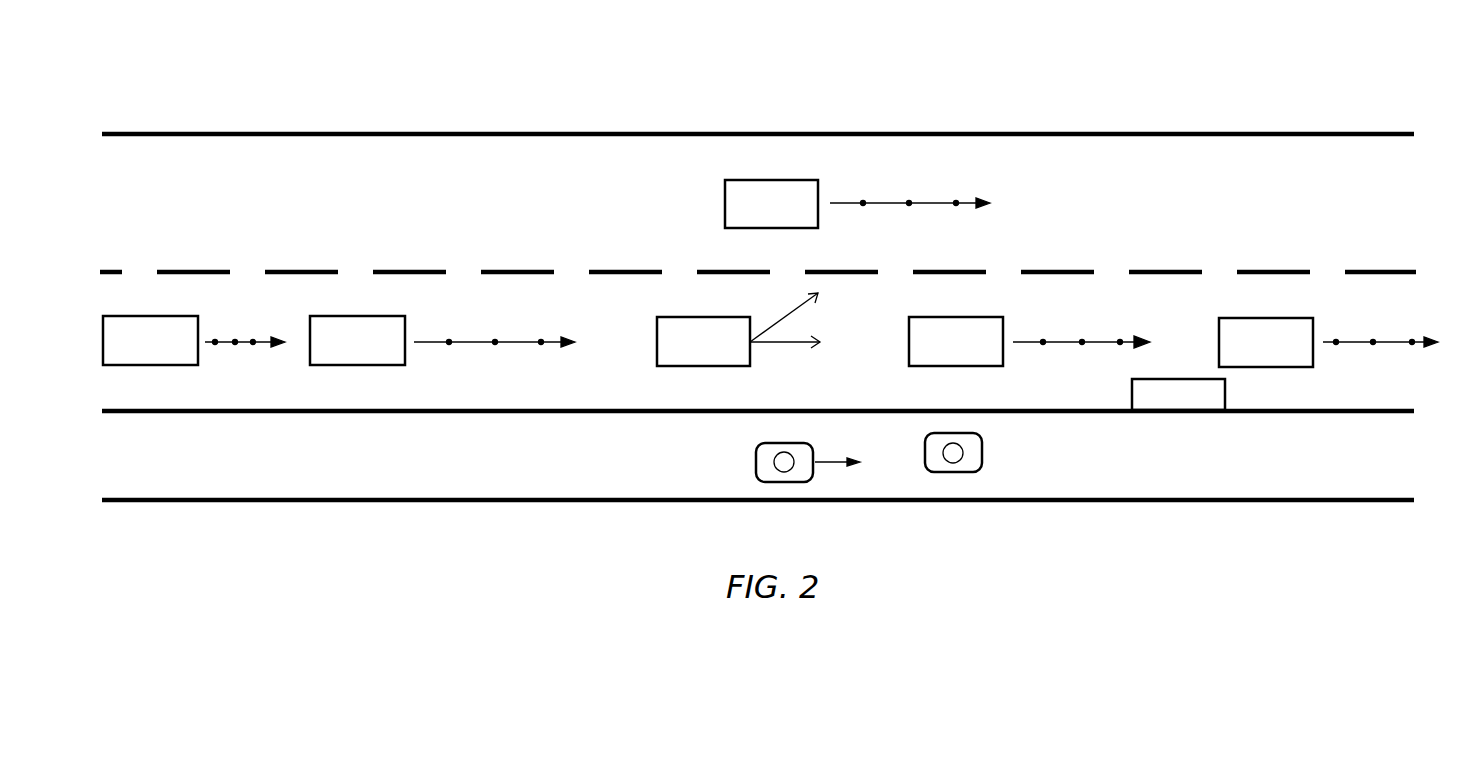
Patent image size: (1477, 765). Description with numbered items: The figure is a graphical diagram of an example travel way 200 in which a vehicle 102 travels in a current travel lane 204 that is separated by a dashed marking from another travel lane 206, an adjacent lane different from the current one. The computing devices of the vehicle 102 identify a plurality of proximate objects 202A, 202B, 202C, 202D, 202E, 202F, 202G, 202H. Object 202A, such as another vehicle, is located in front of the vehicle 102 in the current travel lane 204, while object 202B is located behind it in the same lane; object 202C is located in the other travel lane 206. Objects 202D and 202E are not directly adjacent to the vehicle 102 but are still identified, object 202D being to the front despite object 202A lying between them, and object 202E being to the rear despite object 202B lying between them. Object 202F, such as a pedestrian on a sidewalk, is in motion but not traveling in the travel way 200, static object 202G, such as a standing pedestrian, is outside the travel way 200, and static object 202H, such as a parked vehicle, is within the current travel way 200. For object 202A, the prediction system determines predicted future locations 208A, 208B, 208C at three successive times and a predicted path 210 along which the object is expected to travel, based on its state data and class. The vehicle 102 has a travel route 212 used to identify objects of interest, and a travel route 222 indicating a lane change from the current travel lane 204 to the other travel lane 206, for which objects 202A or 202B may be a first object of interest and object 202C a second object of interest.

The travel way 200 is at (402, 70).
The other travel lane 206 is at (1408, 156).
The current travel lane 204 is at (1406, 299).
The vehicle 102 is at (685, 354).
The object 202A is at (931, 354).
The object 202B is at (333, 353).
The object 202C is at (747, 216).
The object 202D is at (1241, 355).
The object 202E is at (126, 353).
The object 202F is at (760, 462).
The static object 202G is at (972, 452).
The static object 202H is at (1153, 406).
The predicted future location 208A is at (1043, 344).
The predicted future location 208B is at (1082, 344).
The predicted future location 208C is at (1120, 344).
The predicted path 210 is at (1140, 342).
The travel route 212 is at (784, 346).
The travel route 222 is at (781, 318).